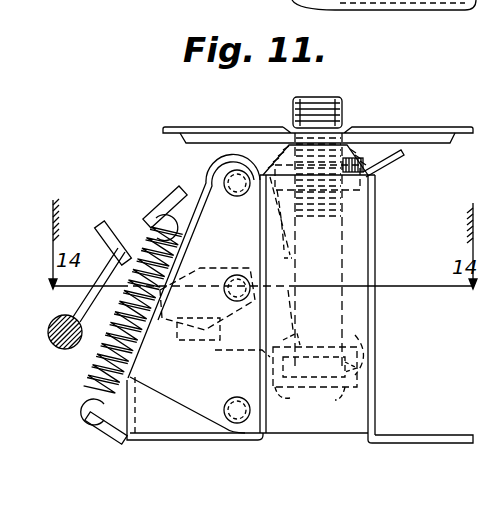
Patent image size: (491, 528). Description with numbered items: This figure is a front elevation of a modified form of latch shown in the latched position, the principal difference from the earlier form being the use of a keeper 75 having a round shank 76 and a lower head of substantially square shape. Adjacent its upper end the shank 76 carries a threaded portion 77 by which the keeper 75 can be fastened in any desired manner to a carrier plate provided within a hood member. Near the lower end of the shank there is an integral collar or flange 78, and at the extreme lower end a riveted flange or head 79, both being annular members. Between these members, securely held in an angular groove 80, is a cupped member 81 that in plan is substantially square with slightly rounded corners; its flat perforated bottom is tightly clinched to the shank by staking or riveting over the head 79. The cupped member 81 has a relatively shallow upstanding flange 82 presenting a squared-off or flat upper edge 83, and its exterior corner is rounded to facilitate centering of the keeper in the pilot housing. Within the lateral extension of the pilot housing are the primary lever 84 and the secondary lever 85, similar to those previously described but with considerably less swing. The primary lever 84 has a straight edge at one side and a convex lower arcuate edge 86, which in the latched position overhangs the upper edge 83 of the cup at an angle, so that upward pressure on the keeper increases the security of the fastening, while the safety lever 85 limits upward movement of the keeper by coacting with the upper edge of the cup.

The keeper 75 is at (347, 115).
The round shank 76 is at (342, 268).
The threaded portion 77 is at (294, 116).
The integral collar or flange 78 is at (367, 357).
The riveted flange or head 79 is at (342, 390).
The angular groove 80 is at (355, 370).
The cupped member 81 is at (290, 390).
The upstanding flange 82 is at (268, 358).
The upper edge 83 is at (360, 342).
The primary lever 84 is at (297, 322).
The secondary lever 85 is at (293, 252).
The convex lower arcuate edge 86 is at (215, 352).